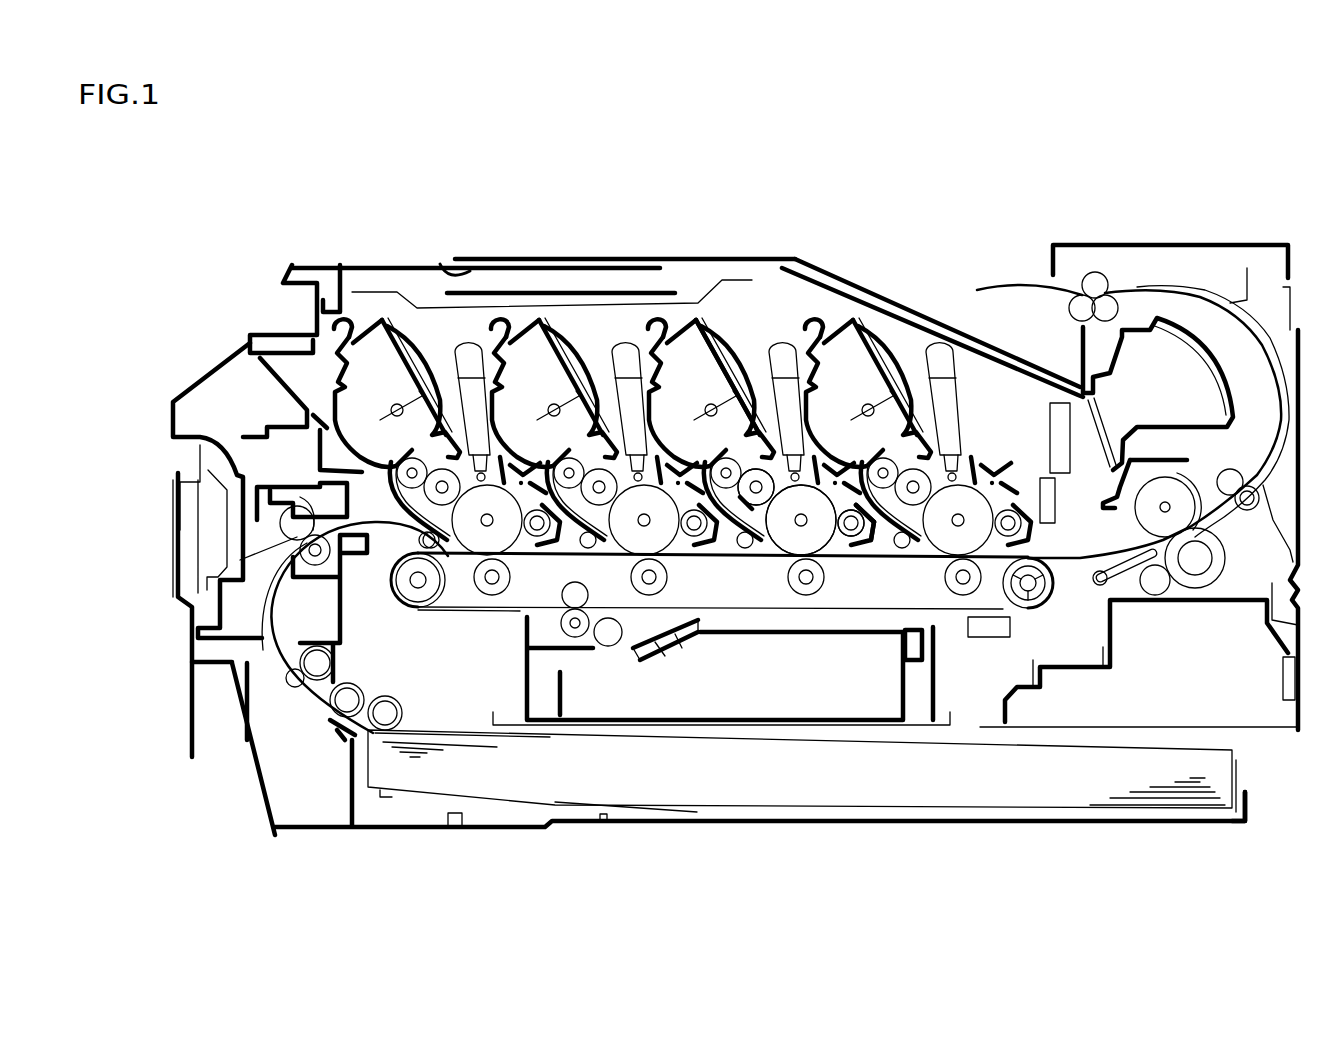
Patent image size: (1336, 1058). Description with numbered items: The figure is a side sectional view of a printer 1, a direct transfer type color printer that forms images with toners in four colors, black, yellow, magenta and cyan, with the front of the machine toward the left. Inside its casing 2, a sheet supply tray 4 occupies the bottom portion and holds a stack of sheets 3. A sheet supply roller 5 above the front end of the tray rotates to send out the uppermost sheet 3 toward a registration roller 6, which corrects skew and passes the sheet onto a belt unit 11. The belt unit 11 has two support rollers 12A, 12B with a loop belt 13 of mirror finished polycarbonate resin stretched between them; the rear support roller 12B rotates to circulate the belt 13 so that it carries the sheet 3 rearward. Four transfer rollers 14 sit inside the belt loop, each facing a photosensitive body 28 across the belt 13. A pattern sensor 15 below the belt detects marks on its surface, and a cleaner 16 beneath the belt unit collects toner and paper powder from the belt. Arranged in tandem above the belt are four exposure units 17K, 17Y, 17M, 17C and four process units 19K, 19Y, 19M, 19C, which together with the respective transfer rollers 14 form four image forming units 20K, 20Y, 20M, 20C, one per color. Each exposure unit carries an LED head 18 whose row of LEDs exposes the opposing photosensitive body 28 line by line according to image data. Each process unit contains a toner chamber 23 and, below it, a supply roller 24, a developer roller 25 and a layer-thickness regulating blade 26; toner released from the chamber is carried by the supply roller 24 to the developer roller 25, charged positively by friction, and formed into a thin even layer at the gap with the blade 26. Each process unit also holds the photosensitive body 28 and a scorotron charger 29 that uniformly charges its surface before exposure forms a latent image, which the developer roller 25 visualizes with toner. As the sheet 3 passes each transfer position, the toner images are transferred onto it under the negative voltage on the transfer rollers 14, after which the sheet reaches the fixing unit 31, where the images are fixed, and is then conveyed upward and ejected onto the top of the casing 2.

The printer 1 is at (848, 185).
The casing 2 is at (1098, 245).
The sheet 3 is at (1152, 760).
The sheet supply tray 4 is at (1247, 805).
The sheet supply roller 5 is at (403, 716).
The registration roller 6 is at (315, 566).
The belt unit 11 is at (412, 617).
The support roller 12A is at (395, 594).
The support roller 12B is at (1045, 605).
The belt 13 is at (438, 612).
The transfer roller 14 is at (805, 597).
The pattern sensor 15 is at (985, 640).
The cleaner 16 is at (792, 727).
The exposure unit 17K is at (463, 345).
The exposure unit 17Y is at (618, 345).
The exposure unit 17M is at (788, 343).
The exposure unit 17C is at (935, 343).
The LED head 18 is at (795, 477).
The process unit 19K is at (360, 303).
The process unit 19Y is at (512, 308).
The process unit 19M is at (685, 316).
The process unit 19C is at (838, 318).
The image forming unit 20K is at (462, 562).
The image forming unit 20Y is at (617, 575).
The image forming unit 20M is at (748, 572).
The image forming unit 20C is at (913, 572).
The toner chamber 23 is at (707, 353).
The supply roller 24 is at (694, 537).
The developer roller 25 is at (742, 503).
The layer-thickness regulating blade 26 is at (745, 498).
The photosensitive body 28 is at (833, 525).
The scorotron charger 29 is at (866, 507).
The fixing unit 31 is at (1113, 521).